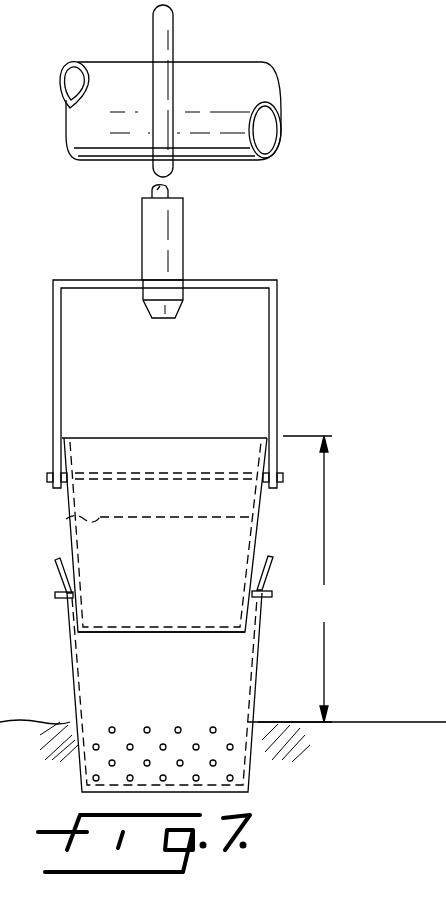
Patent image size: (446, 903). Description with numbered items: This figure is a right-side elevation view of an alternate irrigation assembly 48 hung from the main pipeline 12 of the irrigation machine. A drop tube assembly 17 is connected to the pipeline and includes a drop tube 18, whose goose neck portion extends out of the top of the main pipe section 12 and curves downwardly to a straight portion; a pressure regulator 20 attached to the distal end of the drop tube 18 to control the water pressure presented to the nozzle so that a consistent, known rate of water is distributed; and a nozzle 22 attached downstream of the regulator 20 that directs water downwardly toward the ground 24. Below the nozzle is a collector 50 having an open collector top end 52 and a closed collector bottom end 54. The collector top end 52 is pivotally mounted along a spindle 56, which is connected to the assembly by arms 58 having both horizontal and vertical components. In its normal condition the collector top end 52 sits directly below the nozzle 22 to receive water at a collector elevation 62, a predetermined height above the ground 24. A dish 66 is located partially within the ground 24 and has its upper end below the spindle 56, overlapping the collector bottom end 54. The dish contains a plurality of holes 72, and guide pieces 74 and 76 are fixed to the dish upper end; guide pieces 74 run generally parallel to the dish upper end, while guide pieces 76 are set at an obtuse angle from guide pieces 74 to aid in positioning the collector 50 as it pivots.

The main pipeline 12 is at (262, 62).
The drop tube assembly 17 is at (128, 218).
The drop tube 18 is at (173, 40).
The pressure regulator 20 is at (183, 244).
The nozzle 22 is at (152, 318).
The ground 24 is at (287, 722).
The alternate irrigation assembly 48 is at (112, 52).
The collector 50 is at (72, 516).
The collector top end 52 is at (160, 438).
The collector bottom end 54 is at (162, 632).
The spindle 56 is at (283, 480).
The arms 58 is at (61, 394).
The collector elevation 62 is at (291, 579).
The dish 66 is at (75, 674).
The holes 72 is at (110, 765).
The guide pieces 74 is at (58, 598).
The guide pieces 76 is at (55, 560).